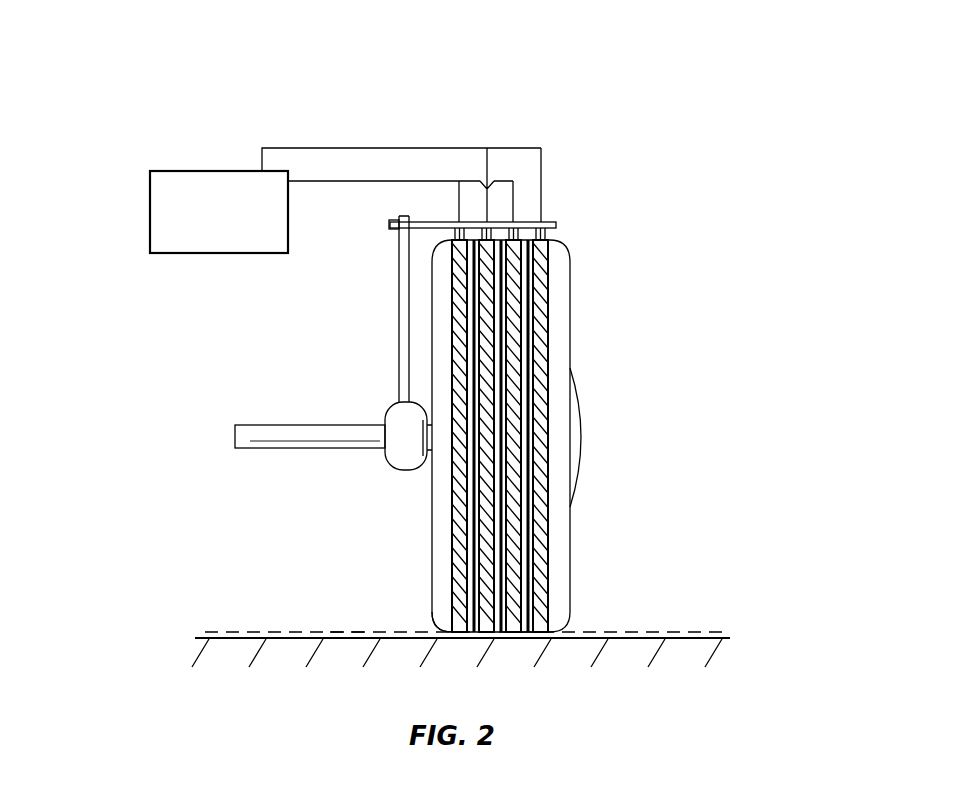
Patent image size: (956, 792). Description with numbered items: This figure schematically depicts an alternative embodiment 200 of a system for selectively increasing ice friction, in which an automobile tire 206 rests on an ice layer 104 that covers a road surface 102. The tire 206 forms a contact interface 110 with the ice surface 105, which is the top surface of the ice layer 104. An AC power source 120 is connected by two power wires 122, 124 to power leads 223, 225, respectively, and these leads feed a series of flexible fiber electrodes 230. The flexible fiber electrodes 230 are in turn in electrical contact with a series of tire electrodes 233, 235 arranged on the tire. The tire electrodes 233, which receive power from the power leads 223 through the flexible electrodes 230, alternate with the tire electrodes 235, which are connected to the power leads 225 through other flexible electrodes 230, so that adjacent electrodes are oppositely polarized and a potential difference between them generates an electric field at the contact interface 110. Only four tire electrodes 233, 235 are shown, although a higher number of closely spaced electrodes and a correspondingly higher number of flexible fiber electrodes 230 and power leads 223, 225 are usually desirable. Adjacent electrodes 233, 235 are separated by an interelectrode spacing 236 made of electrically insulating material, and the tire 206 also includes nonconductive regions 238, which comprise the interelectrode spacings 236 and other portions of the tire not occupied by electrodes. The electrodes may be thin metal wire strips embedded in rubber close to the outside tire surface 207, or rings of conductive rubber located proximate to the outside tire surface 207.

The alternative embodiment 200 is at (590, 131).
The AC power source 120 is at (175, 173).
The power wire 122 is at (347, 148).
The power wire 124 is at (333, 181).
The power leads 223 is at (488, 163).
The power leads 225 is at (459, 190).
The flexible fiber electrodes 230 is at (556, 235).
The tire electrodes 233 is at (543, 285).
The tire electrodes 235 is at (517, 309).
The automobile tire 206 is at (524, 436).
The interelectrode spacing 236 is at (500, 520).
The nonconductive regions 238 is at (560, 575).
The contact interface 110 is at (578, 626).
The ice layer 104 is at (266, 632).
The ice surface 105 is at (355, 632).
The outside tire surface 207 is at (463, 633).
The road surface 102 is at (326, 664).